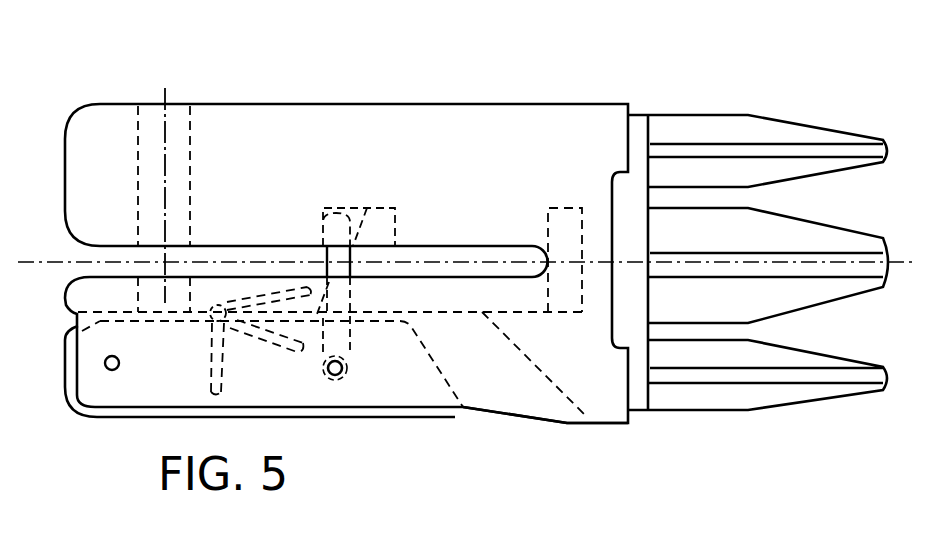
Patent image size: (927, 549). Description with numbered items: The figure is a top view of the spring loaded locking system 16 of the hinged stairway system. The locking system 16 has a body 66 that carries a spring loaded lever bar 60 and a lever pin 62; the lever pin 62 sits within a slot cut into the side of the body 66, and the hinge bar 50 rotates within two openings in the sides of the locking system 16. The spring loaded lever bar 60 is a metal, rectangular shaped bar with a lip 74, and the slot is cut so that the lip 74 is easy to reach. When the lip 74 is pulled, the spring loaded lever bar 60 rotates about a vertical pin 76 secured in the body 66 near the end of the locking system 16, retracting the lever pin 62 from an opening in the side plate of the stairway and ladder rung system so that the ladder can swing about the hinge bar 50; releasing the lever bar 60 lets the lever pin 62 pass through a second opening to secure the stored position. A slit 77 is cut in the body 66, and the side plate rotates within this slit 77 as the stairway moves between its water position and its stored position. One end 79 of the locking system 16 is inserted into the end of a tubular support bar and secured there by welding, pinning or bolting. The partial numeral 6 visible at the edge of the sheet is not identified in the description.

The spring loaded locking system 16 is at (584, 64).
The hinge bar 50 is at (204, 130).
The lever pin 62 is at (330, 215).
The body 66 is at (113, 130).
The spring loaded lever bar 60 is at (395, 385).
The lip 74 is at (460, 408).
The vertical pin 76 is at (105, 370).
The slit 77 is at (72, 252).
The end of the spring loaded locking system 79 is at (766, 133).
The tubular member 6 is at (6, 323).